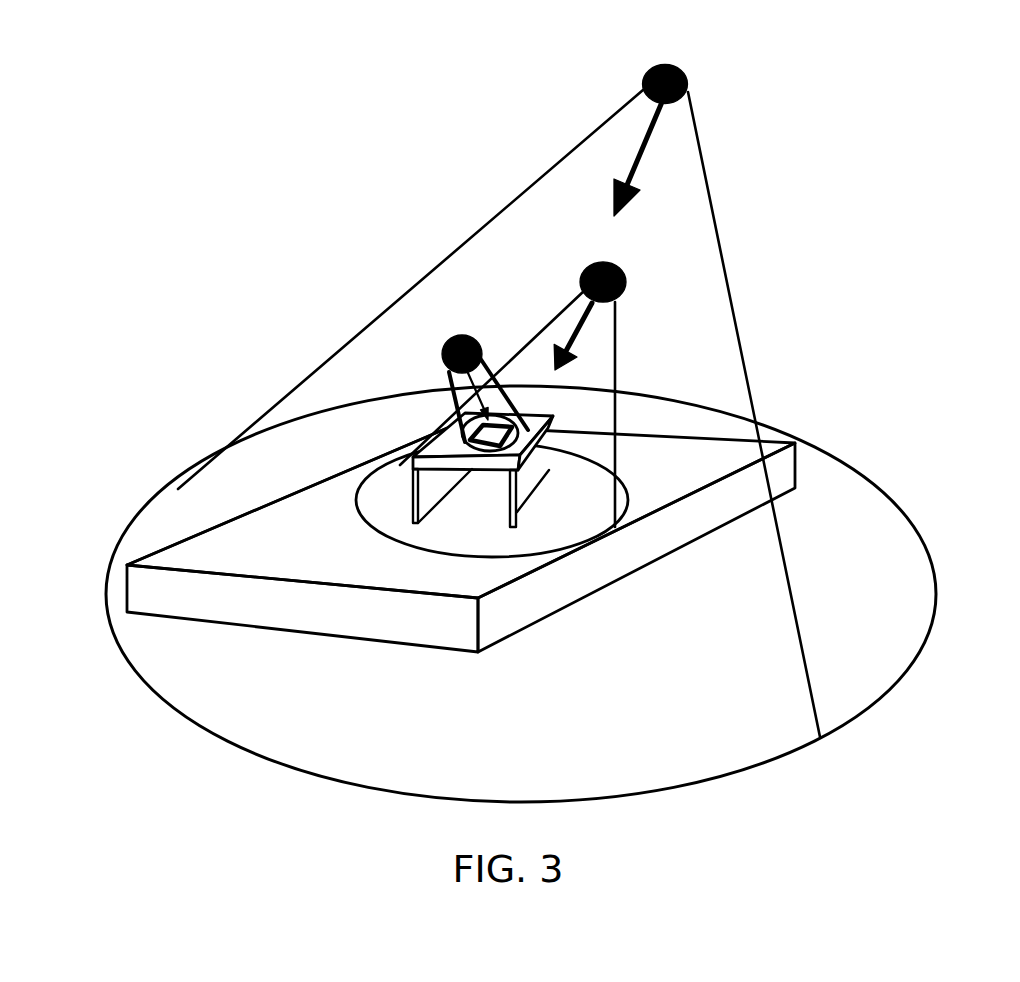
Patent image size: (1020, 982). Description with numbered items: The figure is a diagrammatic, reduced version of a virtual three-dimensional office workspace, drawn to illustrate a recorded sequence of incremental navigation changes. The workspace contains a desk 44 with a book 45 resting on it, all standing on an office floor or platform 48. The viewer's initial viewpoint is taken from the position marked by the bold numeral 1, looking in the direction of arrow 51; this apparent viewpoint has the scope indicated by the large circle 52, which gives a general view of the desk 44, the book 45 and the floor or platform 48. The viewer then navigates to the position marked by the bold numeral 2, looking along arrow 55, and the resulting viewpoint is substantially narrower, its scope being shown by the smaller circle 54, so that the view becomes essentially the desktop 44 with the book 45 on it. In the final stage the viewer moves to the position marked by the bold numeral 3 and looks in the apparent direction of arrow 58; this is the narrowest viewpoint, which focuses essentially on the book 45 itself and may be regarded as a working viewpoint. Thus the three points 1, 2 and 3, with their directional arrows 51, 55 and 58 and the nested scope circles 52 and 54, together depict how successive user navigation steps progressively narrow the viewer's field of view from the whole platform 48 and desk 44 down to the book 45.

The first viewpoint point 1 is at (499, 368).
The second viewpoint point 2 is at (515, 375).
The third viewpoint point 3 is at (464, 355).
The desk 44 is at (416, 454).
The book 45 is at (462, 414).
The office floor or platform 48 is at (247, 545).
The arrow 51 is at (648, 135).
The circle 52 is at (315, 753).
The circle 54 is at (573, 503).
The arrow 55 is at (580, 327).
The arrow 58 is at (455, 380).